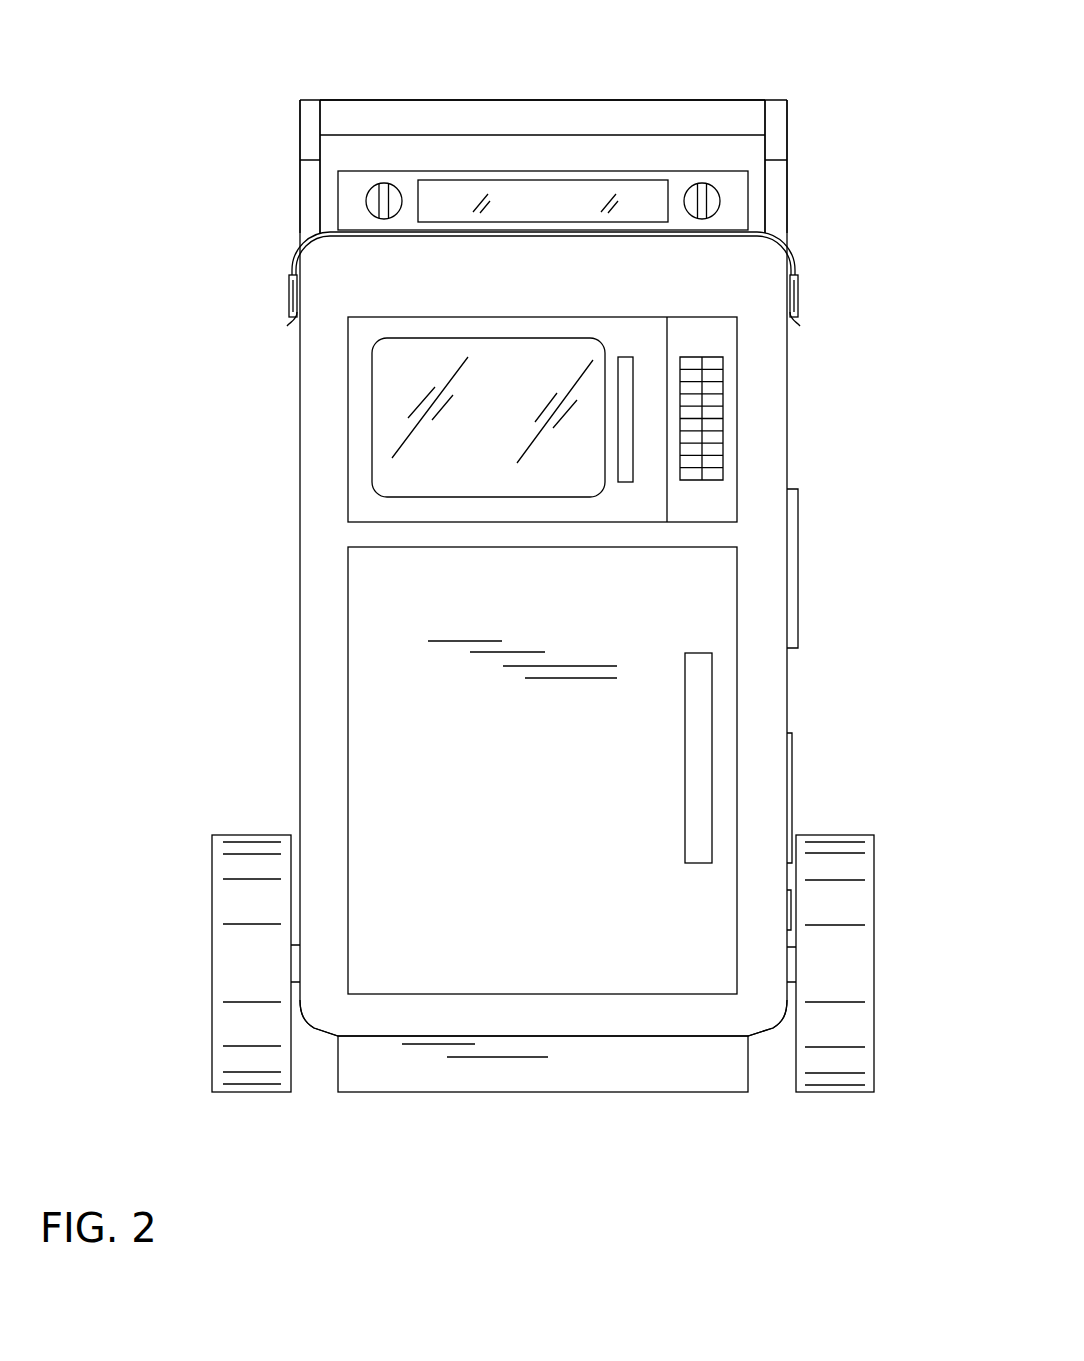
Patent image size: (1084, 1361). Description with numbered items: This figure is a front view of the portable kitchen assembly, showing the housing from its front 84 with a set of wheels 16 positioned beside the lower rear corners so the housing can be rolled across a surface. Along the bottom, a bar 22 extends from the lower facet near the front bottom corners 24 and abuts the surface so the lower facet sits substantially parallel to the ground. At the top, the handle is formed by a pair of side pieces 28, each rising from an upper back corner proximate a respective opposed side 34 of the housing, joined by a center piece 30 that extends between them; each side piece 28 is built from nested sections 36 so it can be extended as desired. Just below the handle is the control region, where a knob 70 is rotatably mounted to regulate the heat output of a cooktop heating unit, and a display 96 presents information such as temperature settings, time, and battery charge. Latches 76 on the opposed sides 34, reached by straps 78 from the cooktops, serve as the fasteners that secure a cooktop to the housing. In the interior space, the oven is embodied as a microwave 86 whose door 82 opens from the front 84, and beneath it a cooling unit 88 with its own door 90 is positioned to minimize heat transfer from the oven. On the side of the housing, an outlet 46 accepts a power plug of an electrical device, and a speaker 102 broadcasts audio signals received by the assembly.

The set of wheels 16 is at (277, 897).
The bar 22 is at (585, 1057).
The front bottom corners 24 is at (314, 1023).
The side pieces 28 is at (315, 137).
The center piece 30 is at (561, 97).
The opposed sides 34 is at (305, 457).
The nested sections 36 is at (790, 125).
The outlet 46 is at (797, 757).
The knob 70 is at (362, 198).
The latch 76 is at (287, 286).
The straps 78 is at (316, 252).
The door 82 is at (362, 420).
The front 84 is at (332, 580).
The microwave 86 is at (405, 377).
The cooling unit 88 is at (387, 698).
The door 90 is at (395, 757).
The display 96 is at (542, 197).
The speaker 102 is at (812, 561).